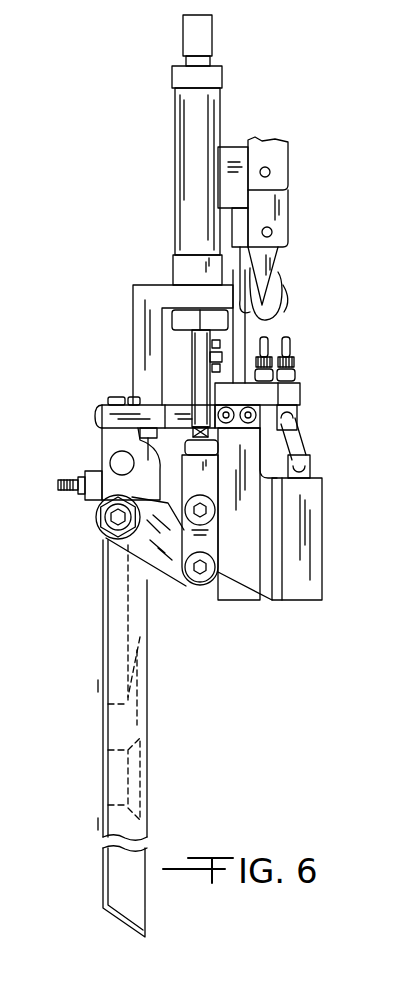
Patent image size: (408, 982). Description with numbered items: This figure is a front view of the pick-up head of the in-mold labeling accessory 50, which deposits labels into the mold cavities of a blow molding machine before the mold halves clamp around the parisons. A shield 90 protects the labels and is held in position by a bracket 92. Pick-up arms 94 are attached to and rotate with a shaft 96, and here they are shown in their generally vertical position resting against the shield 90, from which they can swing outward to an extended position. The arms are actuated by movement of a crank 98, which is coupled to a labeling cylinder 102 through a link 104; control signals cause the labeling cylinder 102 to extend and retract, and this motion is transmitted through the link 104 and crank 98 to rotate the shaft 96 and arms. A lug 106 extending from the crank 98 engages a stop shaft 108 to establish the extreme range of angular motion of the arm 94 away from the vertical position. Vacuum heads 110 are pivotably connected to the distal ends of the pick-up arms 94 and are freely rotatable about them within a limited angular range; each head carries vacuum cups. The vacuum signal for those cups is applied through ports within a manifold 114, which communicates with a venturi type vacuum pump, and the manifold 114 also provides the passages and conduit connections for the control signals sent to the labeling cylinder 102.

The in-mold labeling accessory 50 is at (152, 258).
The shield 90 is at (147, 790).
The bracket 92 is at (133, 326).
The pick-up arm 94 is at (133, 628).
The shaft 96 is at (100, 530).
The crank 98 is at (150, 572).
The labeling cylinder 102 is at (177, 167).
The link 104 is at (218, 547).
The lug 106 is at (102, 448).
The stop shaft 108 is at (73, 482).
The vacuum head 110 is at (150, 745).
The manifold 114 is at (300, 395).